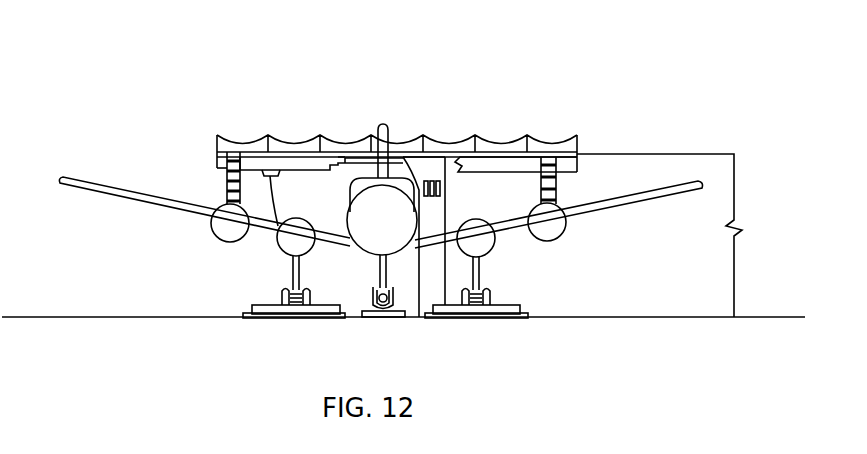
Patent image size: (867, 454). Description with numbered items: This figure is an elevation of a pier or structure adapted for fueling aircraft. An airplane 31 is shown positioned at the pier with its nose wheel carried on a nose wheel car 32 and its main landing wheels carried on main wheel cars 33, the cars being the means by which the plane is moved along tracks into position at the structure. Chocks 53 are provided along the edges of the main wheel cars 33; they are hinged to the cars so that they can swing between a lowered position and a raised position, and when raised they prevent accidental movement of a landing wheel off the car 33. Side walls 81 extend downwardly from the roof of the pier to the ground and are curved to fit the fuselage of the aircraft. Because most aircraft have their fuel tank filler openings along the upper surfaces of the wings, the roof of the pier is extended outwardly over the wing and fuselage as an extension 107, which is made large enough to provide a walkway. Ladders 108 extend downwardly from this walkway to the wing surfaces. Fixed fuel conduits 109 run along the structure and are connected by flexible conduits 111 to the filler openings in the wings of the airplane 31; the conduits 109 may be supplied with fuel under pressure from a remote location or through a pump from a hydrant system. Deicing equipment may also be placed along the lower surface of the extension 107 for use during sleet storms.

The airplane 31 is at (381, 230).
The nose wheel car 32 is at (379, 318).
The main wheel car 33 is at (306, 318).
The chock 53 is at (323, 308).
The side wall 81 is at (432, 212).
The roof extension 107 is at (307, 154).
The ladder 108 is at (225, 190).
The fixed fuel conduit 109 is at (360, 158).
The flexible conduit 111 is at (280, 210).